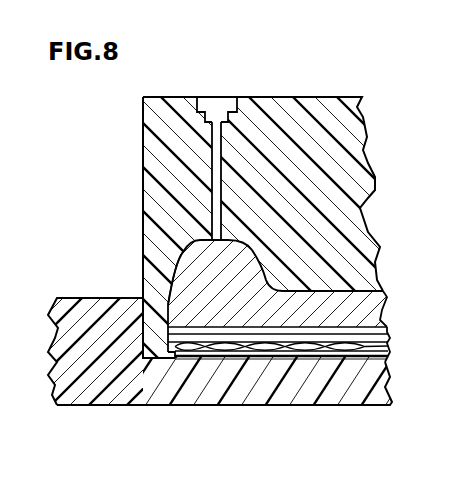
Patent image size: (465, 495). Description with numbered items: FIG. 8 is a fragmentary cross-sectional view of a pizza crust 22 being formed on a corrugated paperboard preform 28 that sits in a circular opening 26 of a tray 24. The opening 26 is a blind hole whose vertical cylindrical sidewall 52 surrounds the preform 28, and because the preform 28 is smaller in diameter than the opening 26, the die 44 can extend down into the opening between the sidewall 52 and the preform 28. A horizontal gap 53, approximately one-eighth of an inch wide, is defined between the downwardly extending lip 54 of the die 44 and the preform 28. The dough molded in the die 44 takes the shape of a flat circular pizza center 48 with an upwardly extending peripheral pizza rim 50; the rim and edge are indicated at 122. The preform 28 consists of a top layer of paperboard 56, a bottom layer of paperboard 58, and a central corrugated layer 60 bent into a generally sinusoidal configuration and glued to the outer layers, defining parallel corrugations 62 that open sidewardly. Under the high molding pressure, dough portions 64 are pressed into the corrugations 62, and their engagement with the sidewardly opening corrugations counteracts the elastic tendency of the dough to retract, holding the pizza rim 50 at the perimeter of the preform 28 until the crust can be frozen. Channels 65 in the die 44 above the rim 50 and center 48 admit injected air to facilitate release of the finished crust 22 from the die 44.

The die 44 is at (252, 97).
The channels 65 is at (212, 160).
The pizza rim 50 is at (256, 249).
The pizza center 48 is at (342, 290).
The dough portions 64 is at (175, 346).
The sidewall 52 is at (168, 301).
The pizza crust 22 is at (387, 296).
The seal layer edge 122 is at (388, 327).
The corrugated paperboard preform 28 is at (398, 336).
The top layer of paperboard 56 is at (388, 346).
The corrugated layer 60 is at (388, 351).
The bottom layer of paperboard 58 is at (386, 358).
The corrugations 62 is at (291, 352).
The opening 26 is at (223, 358).
The tray 24 is at (322, 406).
The lip 54 is at (92, 405).
The gap 53 is at (172, 360).